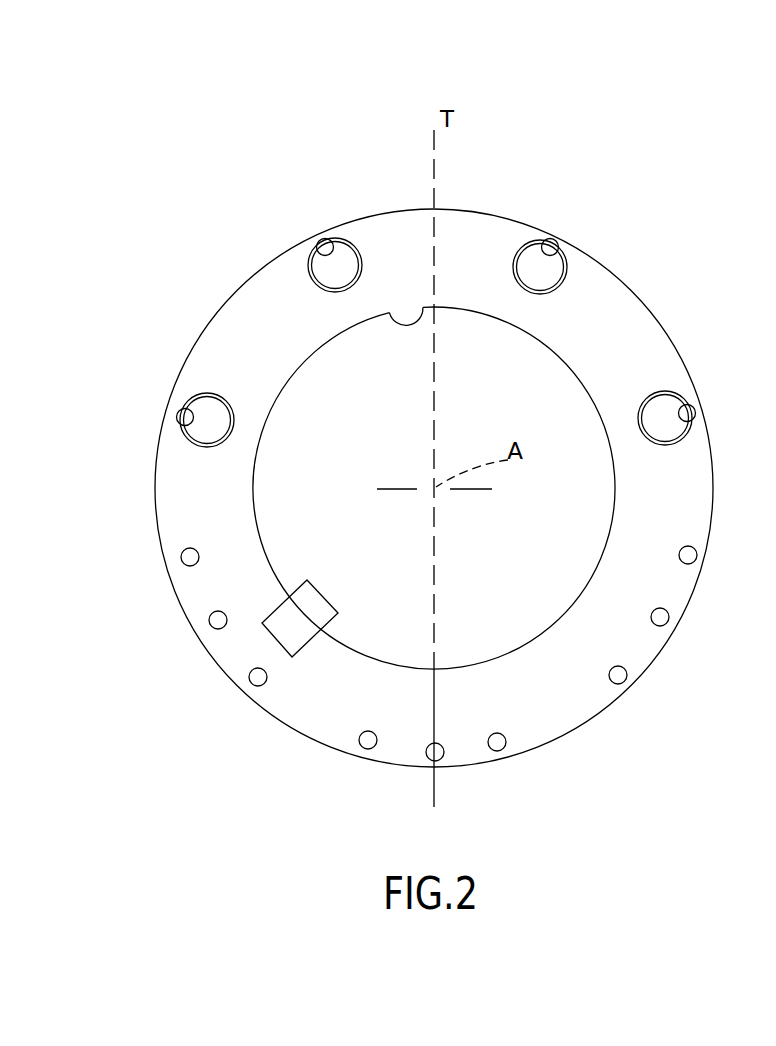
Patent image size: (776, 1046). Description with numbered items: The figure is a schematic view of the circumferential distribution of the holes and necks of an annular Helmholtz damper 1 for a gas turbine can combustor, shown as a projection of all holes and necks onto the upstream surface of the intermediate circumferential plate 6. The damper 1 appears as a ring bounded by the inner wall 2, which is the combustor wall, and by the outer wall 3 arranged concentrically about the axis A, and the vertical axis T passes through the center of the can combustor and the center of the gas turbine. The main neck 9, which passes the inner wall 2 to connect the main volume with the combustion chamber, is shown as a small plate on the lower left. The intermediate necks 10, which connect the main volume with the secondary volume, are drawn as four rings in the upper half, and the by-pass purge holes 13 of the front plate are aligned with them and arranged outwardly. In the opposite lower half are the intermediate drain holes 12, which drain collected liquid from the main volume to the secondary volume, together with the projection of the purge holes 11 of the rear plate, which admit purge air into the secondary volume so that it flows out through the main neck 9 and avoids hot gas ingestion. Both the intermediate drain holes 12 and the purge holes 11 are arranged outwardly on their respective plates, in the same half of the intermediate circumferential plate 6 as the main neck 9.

The annular Helmholtz damper 1 is at (653, 137).
The inner wall 2 is at (390, 312).
The outer wall 3 is at (713, 468).
The intermediate circumferential plate 6 is at (202, 511).
The main neck 9 is at (292, 631).
The intermediate necks 10 is at (229, 401).
The purge holes 11 is at (183, 552).
The intermediate drain holes 12 is at (208, 622).
The by-pass purge holes 13 is at (318, 242).